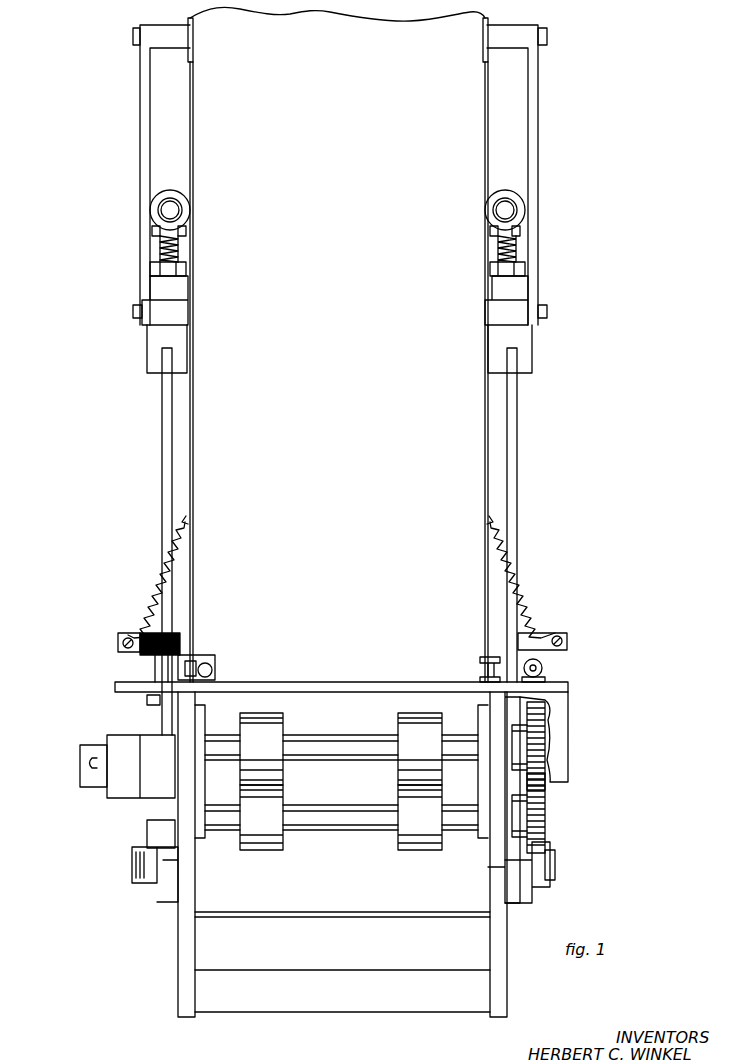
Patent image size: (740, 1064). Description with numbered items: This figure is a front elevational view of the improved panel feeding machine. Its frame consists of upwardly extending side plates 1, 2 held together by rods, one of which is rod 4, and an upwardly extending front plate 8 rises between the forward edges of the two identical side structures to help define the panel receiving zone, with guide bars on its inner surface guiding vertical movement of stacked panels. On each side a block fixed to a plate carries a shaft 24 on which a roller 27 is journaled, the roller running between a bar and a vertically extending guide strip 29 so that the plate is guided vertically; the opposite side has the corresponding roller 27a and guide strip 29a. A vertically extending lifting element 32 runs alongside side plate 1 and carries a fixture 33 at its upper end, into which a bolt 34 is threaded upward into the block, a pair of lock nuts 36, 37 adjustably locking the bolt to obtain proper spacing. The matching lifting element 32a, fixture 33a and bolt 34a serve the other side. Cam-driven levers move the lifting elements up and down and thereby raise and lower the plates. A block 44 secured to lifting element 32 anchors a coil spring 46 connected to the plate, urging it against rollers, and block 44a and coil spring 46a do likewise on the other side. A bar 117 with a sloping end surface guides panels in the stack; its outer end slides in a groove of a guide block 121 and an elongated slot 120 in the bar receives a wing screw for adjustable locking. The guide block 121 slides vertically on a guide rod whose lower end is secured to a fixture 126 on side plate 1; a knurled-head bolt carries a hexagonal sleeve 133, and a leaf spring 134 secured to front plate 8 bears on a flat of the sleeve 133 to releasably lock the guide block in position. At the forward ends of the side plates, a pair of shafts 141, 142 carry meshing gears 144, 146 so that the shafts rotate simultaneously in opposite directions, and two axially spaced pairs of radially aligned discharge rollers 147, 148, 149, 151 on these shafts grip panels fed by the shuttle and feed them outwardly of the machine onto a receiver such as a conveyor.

The side plate 1 is at (182, 996).
The side plate 2 is at (496, 1015).
The rod 4 is at (256, 996).
The front plate 8 is at (346, 287).
The shaft 24 is at (178, 210).
The roller 27 is at (172, 192).
The roller 27a is at (503, 194).
The guide strip 29 is at (146, 132).
The guide strip 29a is at (535, 152).
The lifting element 32 is at (165, 502).
The lifting element 32a is at (515, 452).
The fixture 33 is at (160, 335).
The fixture 33a is at (525, 358).
The bolt 34 is at (160, 246).
The bolt 34a is at (522, 250).
The lock nut 36 is at (182, 270).
The lock nut 37 is at (182, 242).
The block 44 is at (122, 634).
The block 44a is at (563, 634).
The coil spring 46 is at (166, 576).
The coil spring 46a is at (535, 592).
The bar 117 is at (86, 750).
The elongated slot 120 is at (92, 768).
The guide block 121 is at (126, 795).
The fixture 126 is at (165, 718).
The sleeve 133 is at (152, 664).
The leaf spring 134 is at (206, 660).
The shaft 141 is at (336, 748).
The shaft 142 is at (346, 818).
The gear 144 is at (540, 748).
The gear 146 is at (540, 830).
The discharge roller 147 is at (280, 722).
The discharge roller 148 is at (410, 726).
The discharge roller 149 is at (265, 840).
The discharge roller 151 is at (426, 842).